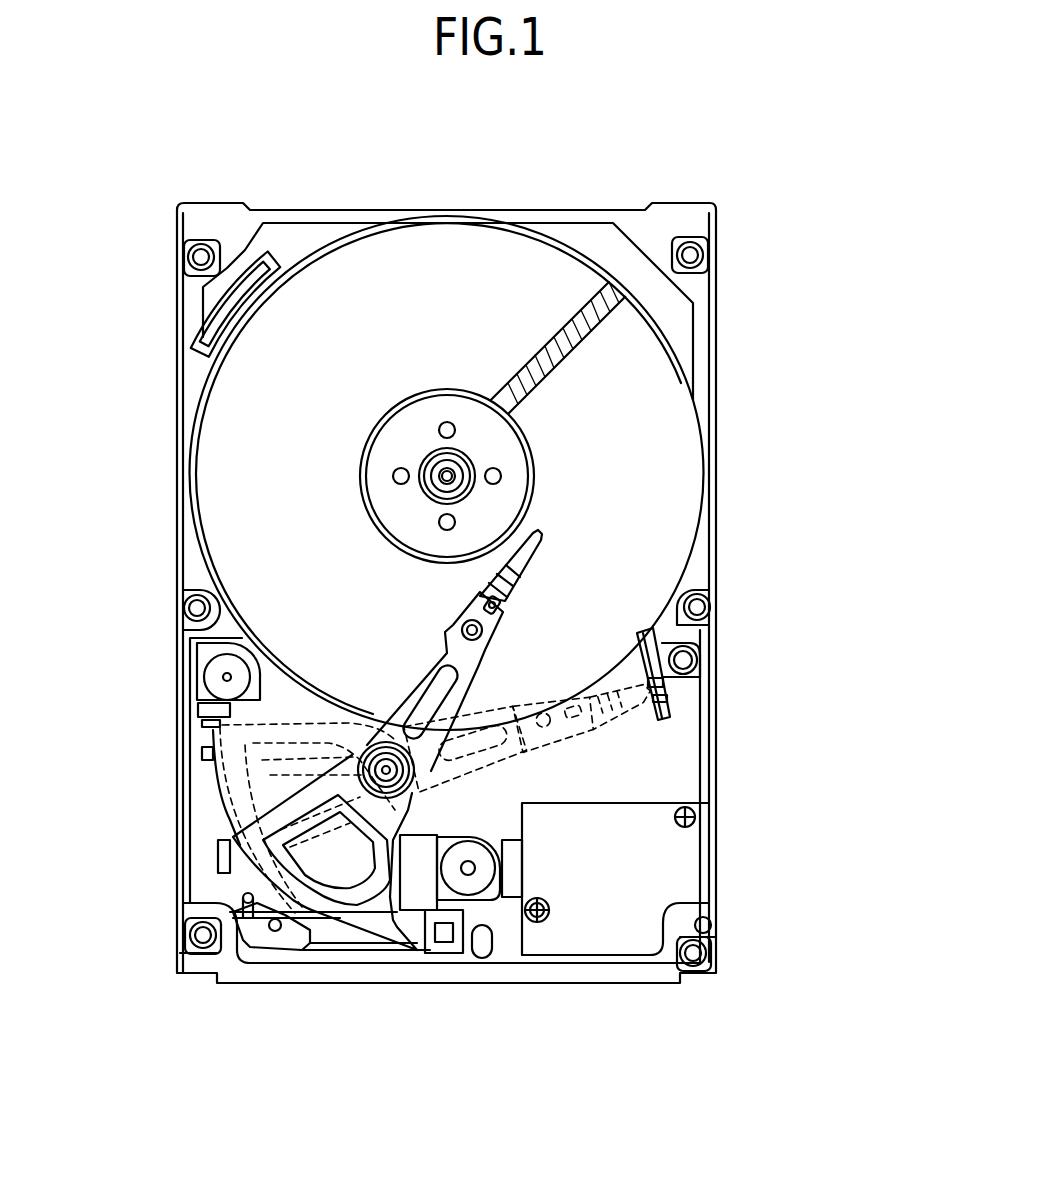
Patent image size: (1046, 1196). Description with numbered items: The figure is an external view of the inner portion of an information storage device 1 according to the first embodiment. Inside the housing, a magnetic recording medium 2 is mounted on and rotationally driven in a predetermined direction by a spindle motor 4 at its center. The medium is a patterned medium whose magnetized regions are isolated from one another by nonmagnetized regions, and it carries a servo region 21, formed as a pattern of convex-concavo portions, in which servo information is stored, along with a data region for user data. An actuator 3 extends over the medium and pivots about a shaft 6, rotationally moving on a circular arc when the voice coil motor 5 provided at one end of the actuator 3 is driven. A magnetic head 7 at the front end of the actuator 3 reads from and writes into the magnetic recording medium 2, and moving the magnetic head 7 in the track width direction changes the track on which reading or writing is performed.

The information storage device 1 is at (705, 159).
The magnetic recording medium 2 is at (550, 262).
The servo region 21 is at (572, 338).
The actuator 3 is at (427, 688).
The spindle motor 4 is at (422, 462).
The voice coil motor 5 is at (369, 914).
The shaft 6 is at (386, 770).
The magnetic head 7 is at (542, 545).